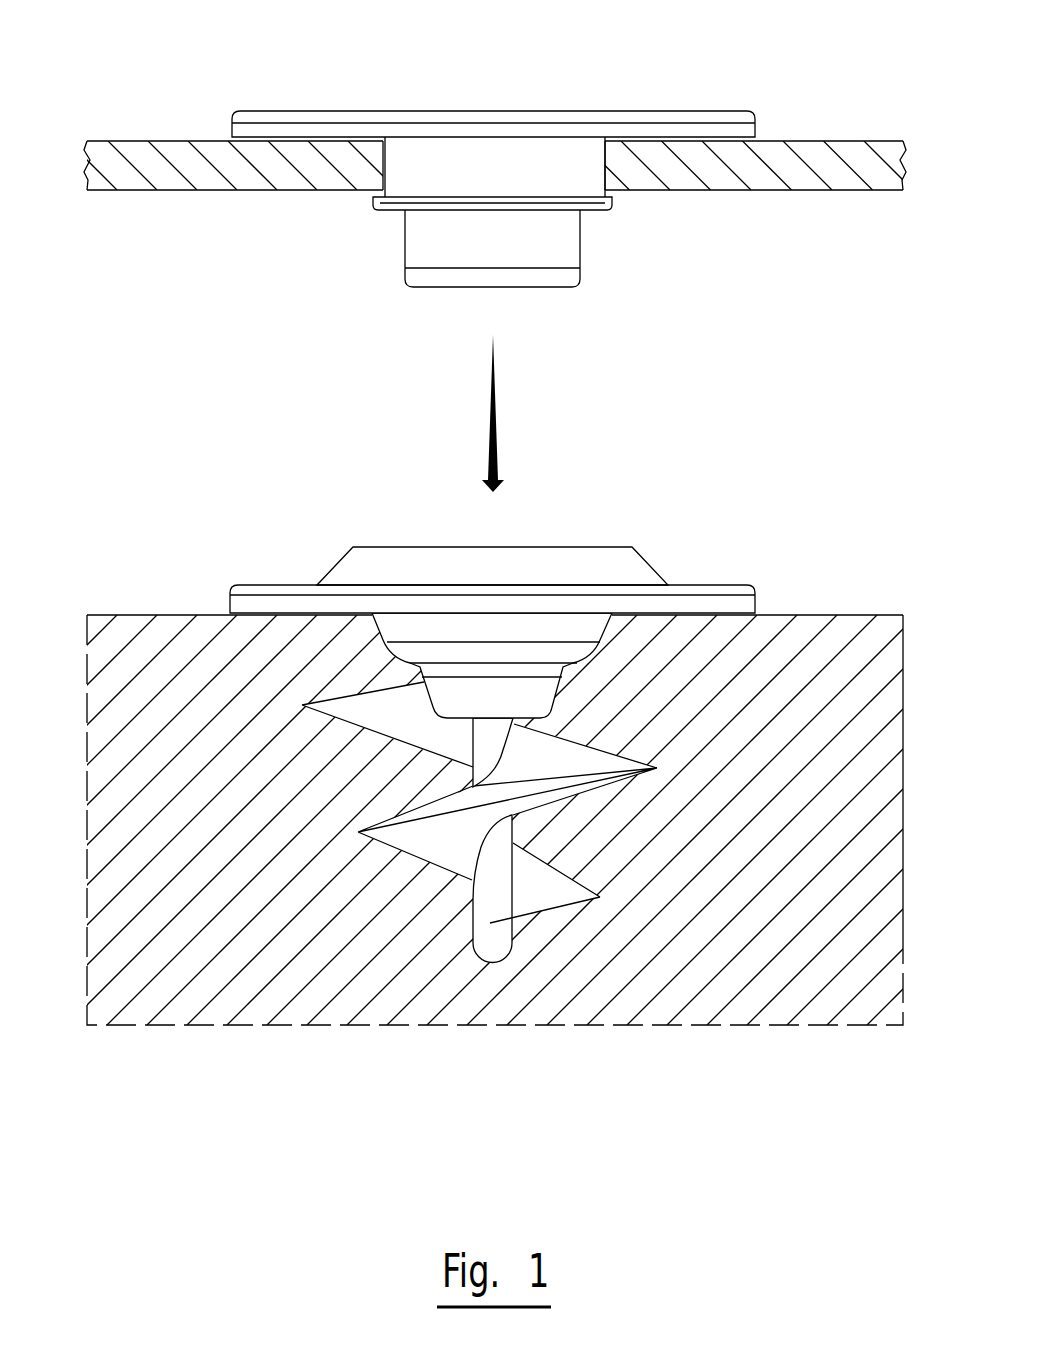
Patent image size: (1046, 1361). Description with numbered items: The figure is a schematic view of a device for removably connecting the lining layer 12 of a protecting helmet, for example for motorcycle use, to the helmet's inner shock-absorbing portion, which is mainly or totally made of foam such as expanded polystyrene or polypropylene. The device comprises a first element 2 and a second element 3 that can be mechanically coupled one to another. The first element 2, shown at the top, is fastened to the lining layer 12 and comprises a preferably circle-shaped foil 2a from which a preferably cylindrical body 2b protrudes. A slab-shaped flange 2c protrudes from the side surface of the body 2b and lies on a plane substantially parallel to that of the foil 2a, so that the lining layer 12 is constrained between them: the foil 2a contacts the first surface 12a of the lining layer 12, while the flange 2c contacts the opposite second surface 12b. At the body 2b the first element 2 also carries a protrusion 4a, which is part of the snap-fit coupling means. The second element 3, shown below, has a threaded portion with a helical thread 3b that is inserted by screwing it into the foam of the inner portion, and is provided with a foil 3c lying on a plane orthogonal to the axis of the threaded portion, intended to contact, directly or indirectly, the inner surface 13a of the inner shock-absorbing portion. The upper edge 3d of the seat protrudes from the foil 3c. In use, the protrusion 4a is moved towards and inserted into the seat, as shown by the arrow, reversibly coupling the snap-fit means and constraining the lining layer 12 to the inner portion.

The first element 2 is at (493, 157).
The foil 2a is at (285, 133).
The body 2b is at (493, 163).
The flange 2c is at (605, 203).
The protrusion 4a is at (427, 252).
The lining layer 12 is at (511, 149).
The first surface 12a is at (835, 138).
The second surface 12b is at (840, 190).
The second element 3 is at (492, 786).
The helical thread 3b is at (537, 888).
The foil 3c is at (255, 607).
The upper edge 3d is at (395, 572).
The inner surface 13a is at (175, 613).